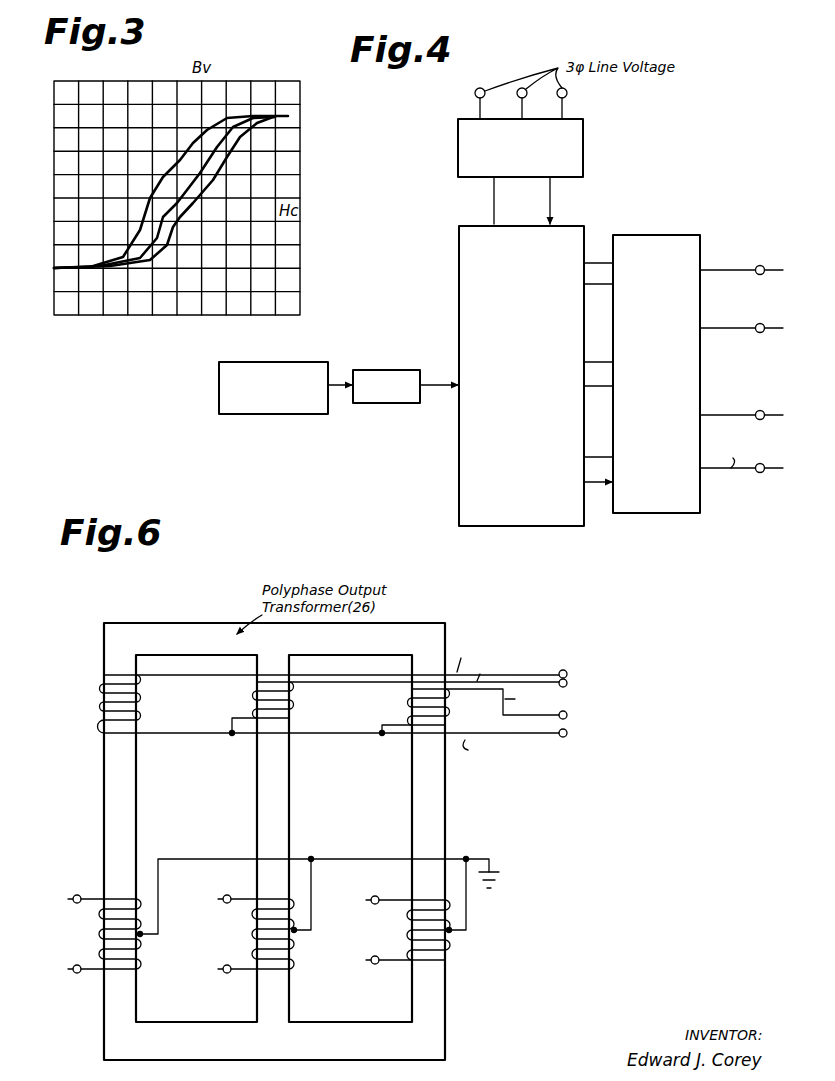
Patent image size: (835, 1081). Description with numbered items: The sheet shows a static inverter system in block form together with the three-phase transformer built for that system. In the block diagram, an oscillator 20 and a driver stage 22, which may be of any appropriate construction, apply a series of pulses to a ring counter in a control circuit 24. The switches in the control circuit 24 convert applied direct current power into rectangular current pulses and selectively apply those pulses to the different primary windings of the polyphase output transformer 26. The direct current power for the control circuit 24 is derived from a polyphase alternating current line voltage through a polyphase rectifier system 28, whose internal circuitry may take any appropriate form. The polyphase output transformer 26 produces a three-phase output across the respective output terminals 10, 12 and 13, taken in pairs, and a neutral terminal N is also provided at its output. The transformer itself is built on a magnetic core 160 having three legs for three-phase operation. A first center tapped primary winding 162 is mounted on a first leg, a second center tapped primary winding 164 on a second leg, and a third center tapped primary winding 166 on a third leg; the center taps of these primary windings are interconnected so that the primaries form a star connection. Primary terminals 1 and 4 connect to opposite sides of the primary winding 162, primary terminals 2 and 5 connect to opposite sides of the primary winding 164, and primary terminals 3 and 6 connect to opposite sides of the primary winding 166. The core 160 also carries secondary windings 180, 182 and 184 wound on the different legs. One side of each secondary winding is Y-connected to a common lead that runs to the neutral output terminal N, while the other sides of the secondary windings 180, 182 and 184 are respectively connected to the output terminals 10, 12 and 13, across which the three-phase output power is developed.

In FIG. 4, the output terminal 10 is at (764, 267).
In FIG. 6, the output terminal 10 is at (567, 671).
In FIG. 4, the output terminal 12 is at (764, 325).
In FIG. 6, the output terminal 12 is at (567, 684).
In FIG. 4, the output terminal 13 is at (764, 412).
In FIG. 6, the output terminal 13 is at (567, 717).
In FIG. 4, the neutral terminal N is at (764, 465).
In FIG. 6, the neutral terminal N is at (566, 736).
In FIG. 4, the oscillator 20 is at (289, 362).
In FIG. 4, the driver stage 22 is at (419, 352).
In FIG. 4, the control circuit 24 is at (475, 467).
In FIG. 4, the polyphase output transformer 26 is at (684, 500).
In FIG. 6, the polyphase output transformer 26 is at (274, 841).
In FIG. 4, the polyphase rectifier system 28 is at (458, 165).
In FIG. 6, the magnetic core 160 is at (434, 633).
In FIG. 6, the secondary winding 180 is at (140, 698).
In FIG. 6, the secondary winding 182 is at (289, 700).
In FIG. 6, the secondary winding 184 is at (412, 700).
In FIG. 6, the first center tapped primary winding 162 is at (140, 957).
In FIG. 6, the second center tapped primary winding 164 is at (292, 960).
In FIG. 6, the third center tapped primary winding 166 is at (448, 955).
In FIG. 6, the primary terminal 1 is at (77, 895).
In FIG. 6, the primary terminal 2 is at (229, 887).
In FIG. 6, the primary terminal 3 is at (377, 887).
In FIG. 6, the primary terminal 4 is at (77, 965).
In FIG. 6, the primary terminal 5 is at (229, 958).
In FIG. 6, the primary terminal 6 is at (377, 949).